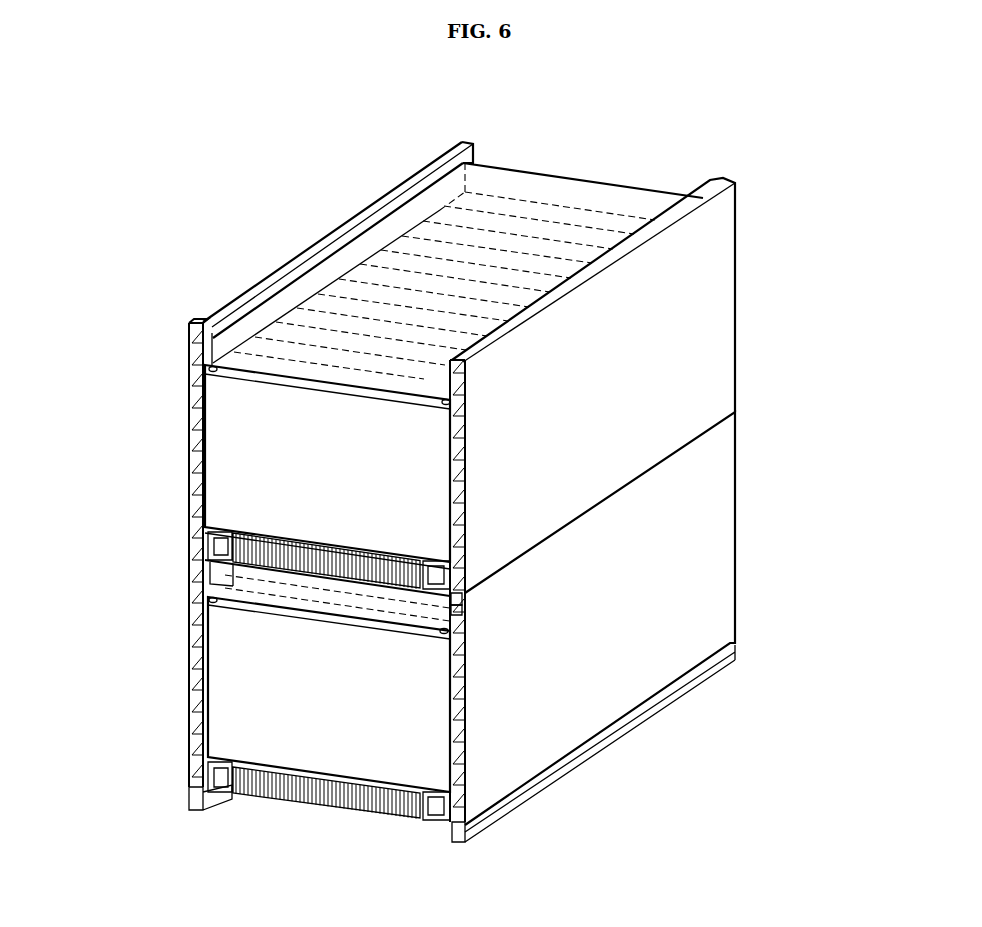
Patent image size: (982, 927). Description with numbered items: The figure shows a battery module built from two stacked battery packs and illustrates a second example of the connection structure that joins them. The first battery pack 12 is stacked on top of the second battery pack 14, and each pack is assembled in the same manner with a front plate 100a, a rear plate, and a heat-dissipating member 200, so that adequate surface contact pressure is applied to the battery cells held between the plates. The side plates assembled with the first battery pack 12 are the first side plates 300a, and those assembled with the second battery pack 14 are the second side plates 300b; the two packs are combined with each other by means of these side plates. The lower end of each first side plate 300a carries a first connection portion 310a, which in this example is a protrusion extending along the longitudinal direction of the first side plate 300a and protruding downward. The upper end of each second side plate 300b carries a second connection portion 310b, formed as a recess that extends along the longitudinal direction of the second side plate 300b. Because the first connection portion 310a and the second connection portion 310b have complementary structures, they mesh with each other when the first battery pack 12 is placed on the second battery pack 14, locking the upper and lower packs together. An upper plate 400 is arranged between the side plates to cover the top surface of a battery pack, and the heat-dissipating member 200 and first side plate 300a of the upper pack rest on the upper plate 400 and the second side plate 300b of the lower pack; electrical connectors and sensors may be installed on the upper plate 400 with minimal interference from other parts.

The first battery pack 12 is at (512, 210).
The second battery pack 14 is at (232, 592).
The front plate 100a is at (232, 692).
The heat-dissipating member 200 is at (323, 797).
The first side plate 300a is at (717, 317).
The second side plate 300b is at (718, 528).
The first connection portion 310a is at (462, 607).
The second connection portion 310b is at (462, 614).
The upper plate 400 is at (210, 582).